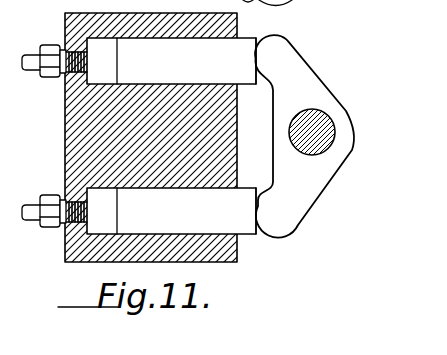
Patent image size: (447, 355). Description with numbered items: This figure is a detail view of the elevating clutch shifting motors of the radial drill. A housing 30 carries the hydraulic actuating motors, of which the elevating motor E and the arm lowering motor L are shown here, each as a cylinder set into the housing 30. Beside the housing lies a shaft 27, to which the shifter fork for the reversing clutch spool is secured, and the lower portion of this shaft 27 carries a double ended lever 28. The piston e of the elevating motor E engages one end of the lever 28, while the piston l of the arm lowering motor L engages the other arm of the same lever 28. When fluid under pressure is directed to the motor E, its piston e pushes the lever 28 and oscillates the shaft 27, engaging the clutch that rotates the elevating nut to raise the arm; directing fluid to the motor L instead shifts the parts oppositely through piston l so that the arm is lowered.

The housing 30 is at (70, 135).
The double ended lever 28 is at (311, 88).
The shaft 27 is at (332, 121).
The arm lowering motor L is at (139, 61).
The elevating motor E is at (139, 211).
The piston of the arm lowering motor l is at (246, 78).
The piston of the elevating motor e is at (247, 190).